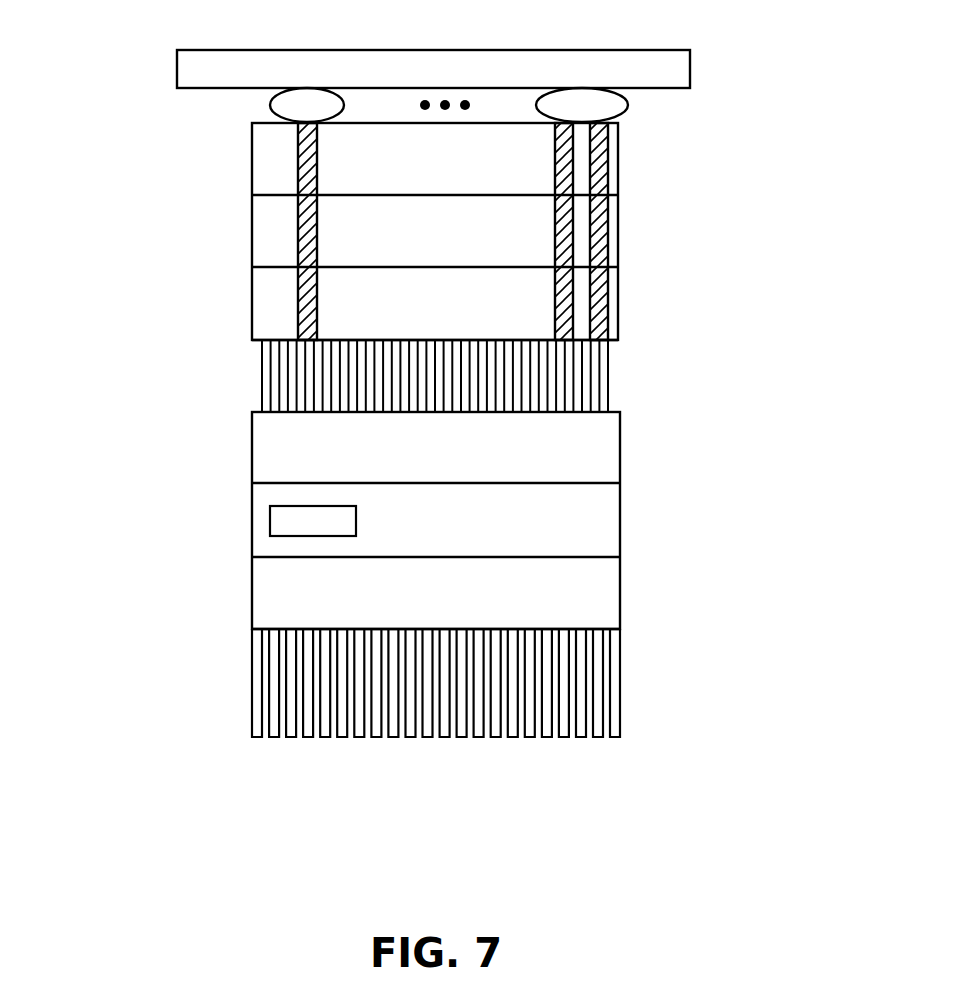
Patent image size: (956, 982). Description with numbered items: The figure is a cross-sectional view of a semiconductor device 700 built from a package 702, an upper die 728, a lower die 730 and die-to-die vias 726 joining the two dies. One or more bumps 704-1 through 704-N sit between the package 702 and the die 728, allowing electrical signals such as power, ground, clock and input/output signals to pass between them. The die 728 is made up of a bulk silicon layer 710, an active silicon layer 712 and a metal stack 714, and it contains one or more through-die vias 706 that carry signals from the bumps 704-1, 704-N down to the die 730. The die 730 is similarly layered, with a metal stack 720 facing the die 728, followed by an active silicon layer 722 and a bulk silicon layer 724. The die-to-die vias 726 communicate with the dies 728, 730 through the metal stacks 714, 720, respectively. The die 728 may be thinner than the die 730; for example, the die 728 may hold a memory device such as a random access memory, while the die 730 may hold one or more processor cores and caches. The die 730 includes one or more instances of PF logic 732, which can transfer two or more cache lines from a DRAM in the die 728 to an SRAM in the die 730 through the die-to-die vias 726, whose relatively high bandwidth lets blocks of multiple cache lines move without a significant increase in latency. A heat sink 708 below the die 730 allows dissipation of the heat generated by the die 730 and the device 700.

The semiconductor device 700 is at (288, 845).
The package 702 is at (433, 69).
The bump 704-1 is at (256, 105).
The bump 704-N is at (642, 105).
The through-die via 706 is at (105, 322).
The heat sink 708 is at (218, 681).
The bulk silicon layer 710 is at (435, 172).
The active Si layer 712 is at (435, 245).
The metal stack 714 is at (435, 308).
The metal stack 720 is at (436, 467).
The active Si layer 722 is at (436, 533).
The bulk Si layer 724 is at (436, 606).
The die-to-die vias 726 is at (622, 377).
The die 728 is at (236, 122).
The die 730 is at (236, 411).
The PF logic 732 is at (313, 521).